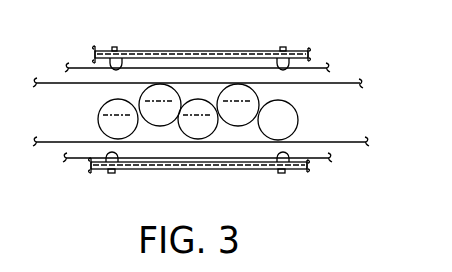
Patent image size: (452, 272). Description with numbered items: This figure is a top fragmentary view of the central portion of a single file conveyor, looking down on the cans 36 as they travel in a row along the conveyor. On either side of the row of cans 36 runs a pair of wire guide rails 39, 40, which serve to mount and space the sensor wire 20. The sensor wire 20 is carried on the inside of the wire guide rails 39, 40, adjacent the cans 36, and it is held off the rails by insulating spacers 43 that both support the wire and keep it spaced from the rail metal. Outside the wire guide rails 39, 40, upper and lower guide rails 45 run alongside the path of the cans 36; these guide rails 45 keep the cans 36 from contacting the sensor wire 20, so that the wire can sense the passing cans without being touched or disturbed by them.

The sensor wire 20 is at (318, 67).
The cans 36 is at (292, 128).
The wire guide rail 39 is at (207, 169).
The wire guide rail 40 is at (182, 50).
The insulating spacers 43 is at (113, 47).
The guide rails 45 is at (352, 83).